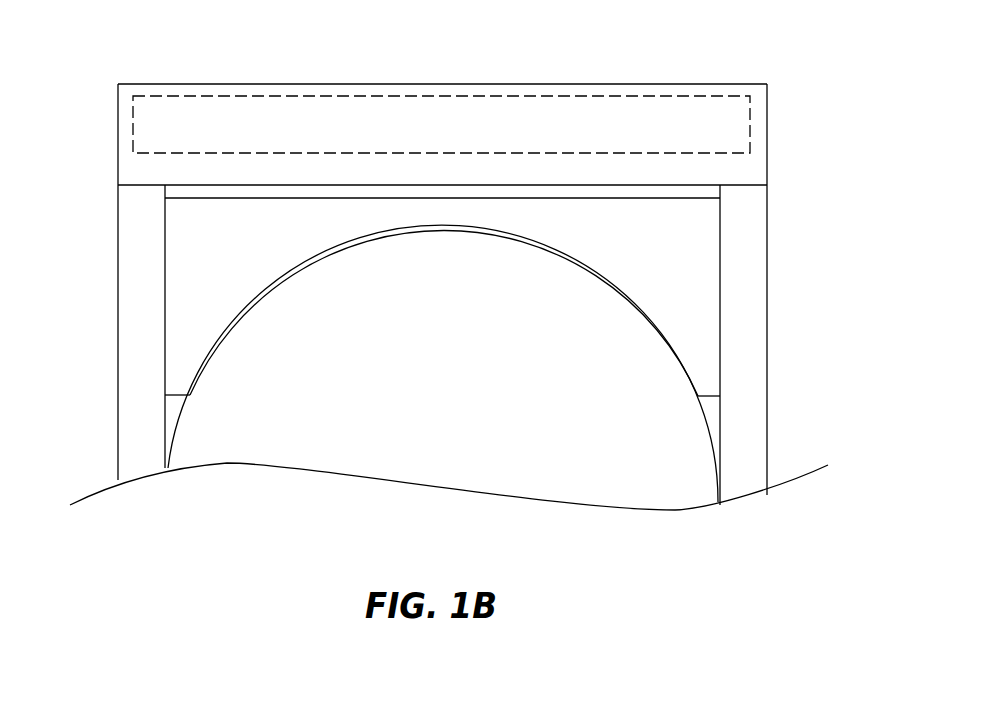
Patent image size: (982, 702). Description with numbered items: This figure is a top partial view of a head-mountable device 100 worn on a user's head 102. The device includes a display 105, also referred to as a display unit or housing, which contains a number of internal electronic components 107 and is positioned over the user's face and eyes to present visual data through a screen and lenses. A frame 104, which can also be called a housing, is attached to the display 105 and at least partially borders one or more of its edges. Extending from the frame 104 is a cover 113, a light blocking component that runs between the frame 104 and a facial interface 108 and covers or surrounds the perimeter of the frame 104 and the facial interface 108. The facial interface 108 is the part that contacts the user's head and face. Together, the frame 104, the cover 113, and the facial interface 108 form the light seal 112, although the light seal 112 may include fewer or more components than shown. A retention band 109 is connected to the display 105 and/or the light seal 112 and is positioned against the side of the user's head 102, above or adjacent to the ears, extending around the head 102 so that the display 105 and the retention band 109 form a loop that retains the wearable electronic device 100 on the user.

The head-mountable device 100 is at (730, 54).
The user's head 102 is at (464, 409).
The frame 104 is at (195, 200).
The display 105 is at (767, 125).
The internal electronic components 107 is at (285, 127).
The facial interface 108 is at (200, 334).
The retention band 109 is at (767, 418).
The light seal 112 is at (675, 247).
The cover 113 is at (190, 261).